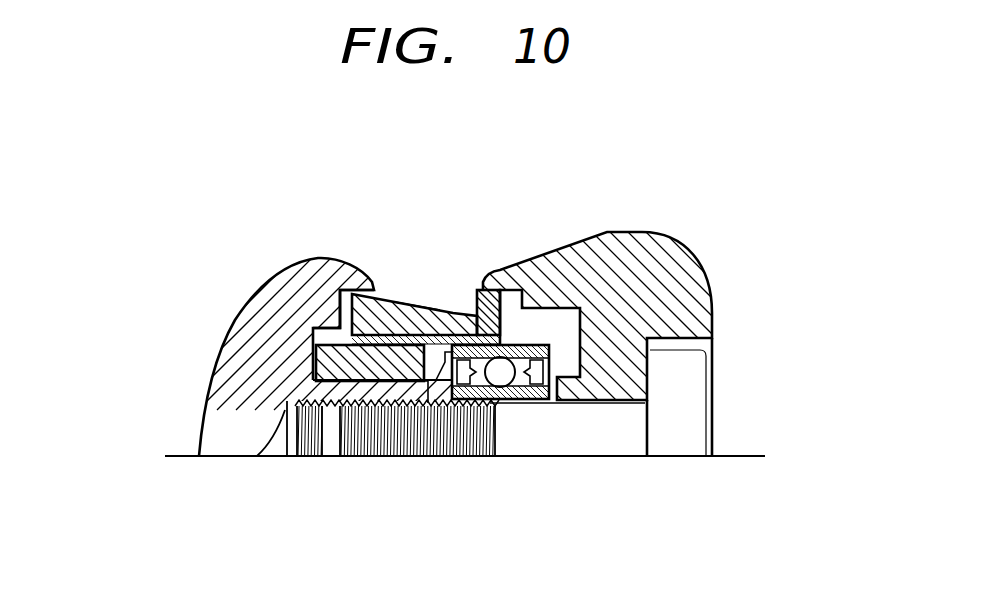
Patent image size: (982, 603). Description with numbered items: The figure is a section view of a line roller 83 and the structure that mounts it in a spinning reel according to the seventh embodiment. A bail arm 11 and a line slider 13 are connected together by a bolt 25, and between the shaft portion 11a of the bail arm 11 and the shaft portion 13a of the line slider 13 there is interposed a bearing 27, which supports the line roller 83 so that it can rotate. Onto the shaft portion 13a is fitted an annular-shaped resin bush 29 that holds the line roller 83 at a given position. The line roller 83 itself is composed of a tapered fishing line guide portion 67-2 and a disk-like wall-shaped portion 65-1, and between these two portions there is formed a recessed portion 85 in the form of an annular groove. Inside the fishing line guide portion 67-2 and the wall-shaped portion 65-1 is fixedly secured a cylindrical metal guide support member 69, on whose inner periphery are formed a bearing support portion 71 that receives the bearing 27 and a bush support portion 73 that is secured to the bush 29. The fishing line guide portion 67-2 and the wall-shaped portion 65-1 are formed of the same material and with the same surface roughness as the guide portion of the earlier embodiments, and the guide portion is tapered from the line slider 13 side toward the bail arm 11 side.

The bail arm 11 is at (713, 320).
The shaft portion of the bail arm 11a is at (560, 402).
The line slider 13 is at (203, 398).
The shaft portion of the line slider 13a is at (345, 458).
The bolt 25 is at (706, 403).
The bearing 27 is at (508, 382).
The resin bush 29 is at (320, 362).
The wall-shaped portion 65-1 is at (483, 288).
The fishing line guide portion 67-2 is at (390, 292).
The guide support member 69 is at (428, 403).
The bearing support portion 71 is at (452, 352).
The bush support portion 73 is at (313, 327).
The line roller 83 is at (415, 299).
The recessed portion 85 is at (473, 313).